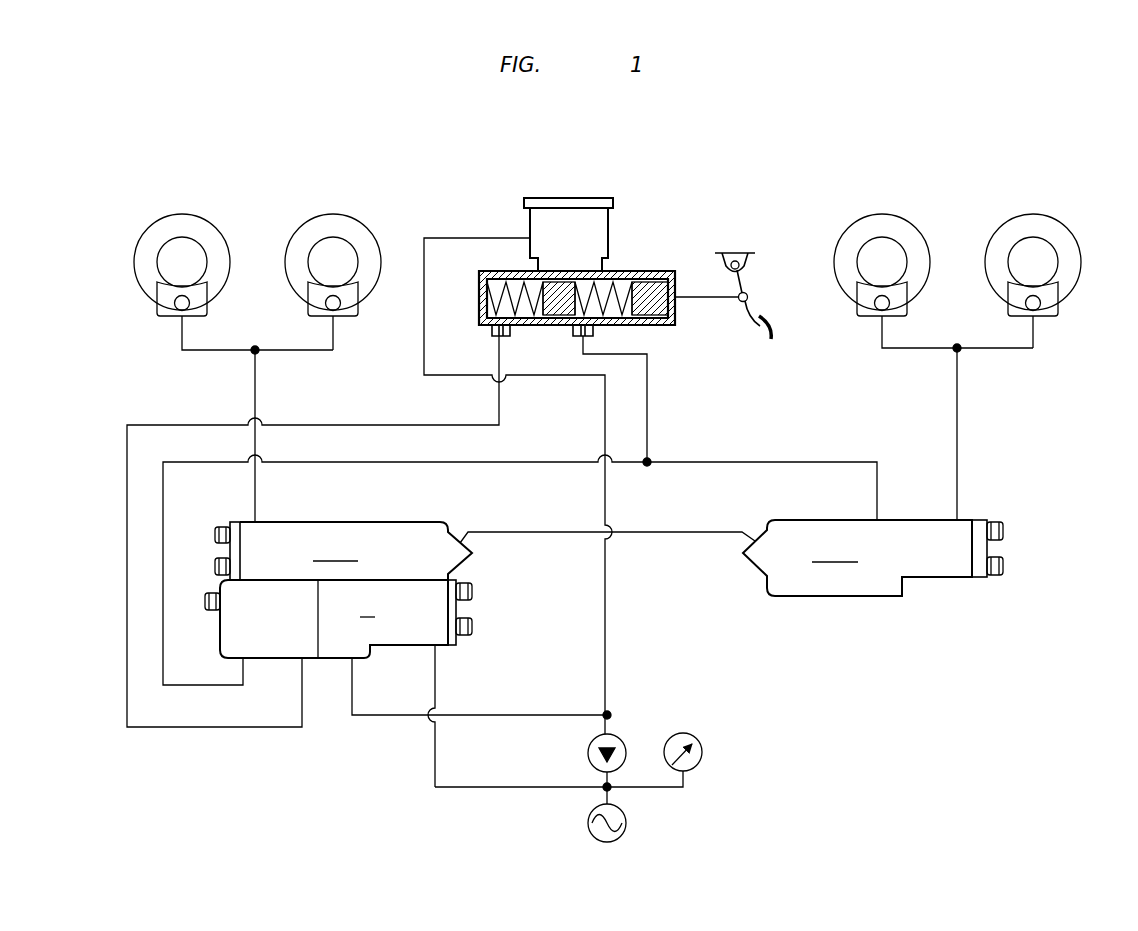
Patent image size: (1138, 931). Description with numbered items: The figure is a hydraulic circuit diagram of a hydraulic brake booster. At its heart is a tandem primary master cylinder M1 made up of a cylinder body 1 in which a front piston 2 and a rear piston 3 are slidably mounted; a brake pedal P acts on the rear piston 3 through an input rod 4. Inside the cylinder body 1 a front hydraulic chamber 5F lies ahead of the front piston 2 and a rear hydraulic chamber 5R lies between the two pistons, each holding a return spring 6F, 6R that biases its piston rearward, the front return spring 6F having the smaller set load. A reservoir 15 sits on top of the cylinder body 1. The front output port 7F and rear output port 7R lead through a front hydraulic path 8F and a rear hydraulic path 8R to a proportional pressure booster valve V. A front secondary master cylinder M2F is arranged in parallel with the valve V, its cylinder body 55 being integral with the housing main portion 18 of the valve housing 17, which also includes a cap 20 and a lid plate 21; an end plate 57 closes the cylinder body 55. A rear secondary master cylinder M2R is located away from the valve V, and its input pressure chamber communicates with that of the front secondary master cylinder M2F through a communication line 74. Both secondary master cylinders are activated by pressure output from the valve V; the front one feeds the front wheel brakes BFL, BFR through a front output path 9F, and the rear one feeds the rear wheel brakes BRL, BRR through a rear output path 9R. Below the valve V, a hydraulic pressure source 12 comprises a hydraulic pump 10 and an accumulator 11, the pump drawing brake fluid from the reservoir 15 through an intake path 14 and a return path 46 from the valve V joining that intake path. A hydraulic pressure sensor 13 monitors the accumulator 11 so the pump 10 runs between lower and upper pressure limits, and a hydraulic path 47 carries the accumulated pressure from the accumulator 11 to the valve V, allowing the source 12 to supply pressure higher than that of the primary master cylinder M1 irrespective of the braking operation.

The cylinder body 1 is at (479, 299).
The front piston 2 is at (559, 296).
The rear piston 3 is at (668, 292).
The input rod 4 is at (706, 298).
The brake pedal P is at (770, 330).
The reservoir 15 is at (597, 198).
The front hydraulic chamber 5F is at (490, 278).
The rear hydraulic chamber 5R is at (615, 280).
The front return spring 6F is at (503, 280).
The rear return spring 6R is at (655, 280).
The front output port 7F is at (505, 337).
The rear output port 7R is at (596, 337).
The primary master cylinder M1 is at (478, 316).
The front hydraulic path 8F is at (350, 425).
The rear hydraulic path 8R is at (545, 462).
The front output path 9F is at (255, 387).
The rear output path 9R is at (957, 418).
The front secondary master cylinder M2F is at (418, 522).
The rear secondary master cylinder M2R is at (918, 520).
The proportional pressure booster valve V is at (338, 619).
The cylinder body 55 is at (418, 483).
The end plate 57 is at (215, 535).
The lid plate 21 is at (474, 610).
The bottomed cylindrical cap 20 is at (255, 650).
The housing 17 is at (378, 656).
The housing main portion 18 is at (415, 648).
The intake path 14 is at (607, 650).
The communication line 74 is at (678, 532).
The return path 46 is at (485, 715).
The hydraulic path 47 is at (478, 787).
The hydraulic pump 10 is at (588, 758).
The accumulator 11 is at (592, 832).
The hydraulic pressure source 12 is at (635, 800).
The hydraulic pressure sensor 13 is at (702, 752).
The front wheel brake BFL is at (138, 297).
The front wheel brake BFR is at (366, 224).
The rear wheel brake BRL is at (838, 233).
The rear wheel brake BRR is at (1066, 224).